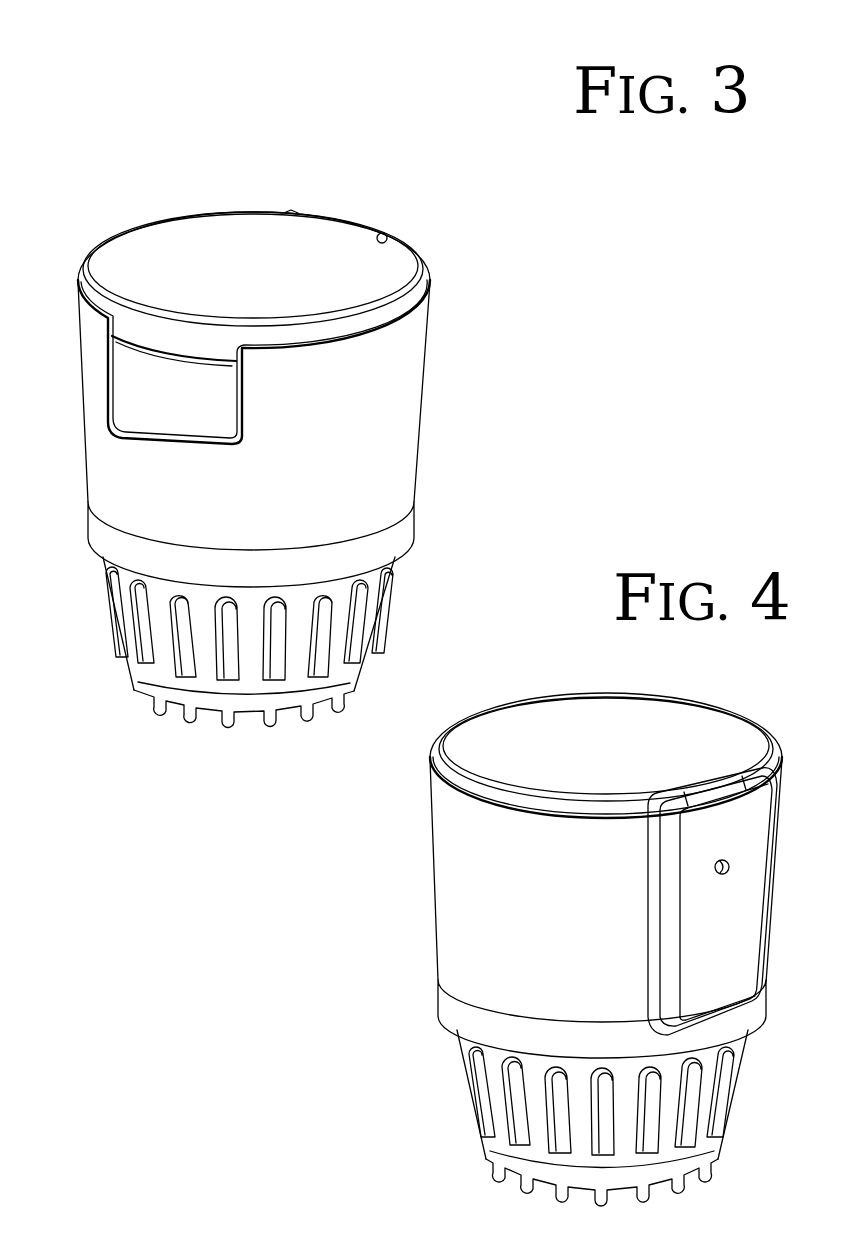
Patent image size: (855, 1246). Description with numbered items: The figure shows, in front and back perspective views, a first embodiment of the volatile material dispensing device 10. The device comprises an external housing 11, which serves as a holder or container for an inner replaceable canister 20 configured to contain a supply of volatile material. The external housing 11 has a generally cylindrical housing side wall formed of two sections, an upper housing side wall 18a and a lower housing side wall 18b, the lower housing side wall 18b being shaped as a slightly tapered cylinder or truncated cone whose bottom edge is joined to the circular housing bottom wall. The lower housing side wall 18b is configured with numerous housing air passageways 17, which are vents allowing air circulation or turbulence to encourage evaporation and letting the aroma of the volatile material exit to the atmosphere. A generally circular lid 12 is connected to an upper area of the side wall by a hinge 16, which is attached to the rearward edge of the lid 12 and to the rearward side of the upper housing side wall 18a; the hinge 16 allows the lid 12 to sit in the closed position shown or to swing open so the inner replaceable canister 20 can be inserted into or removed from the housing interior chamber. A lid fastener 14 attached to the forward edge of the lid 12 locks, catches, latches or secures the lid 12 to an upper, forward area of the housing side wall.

In FIG. 3, the volatile material dispensing device 10 is at (332, 165).
In FIG. 3, the external housing 11 is at (325, 477).
In FIG. 3, the lid 12 is at (440, 242).
In FIG. 3, the lid fastener 14 is at (172, 385).
In FIG. 4, the hinge 16 is at (715, 793).
In FIG. 3, the housing air passageways 17 is at (313, 663).
In FIG. 3, the upper housing side wall 18a is at (328, 488).
In FIG. 3, the lower housing side wall 18b is at (337, 673).
In FIG. 3, the inner replaceable canister 20 is at (293, 686).